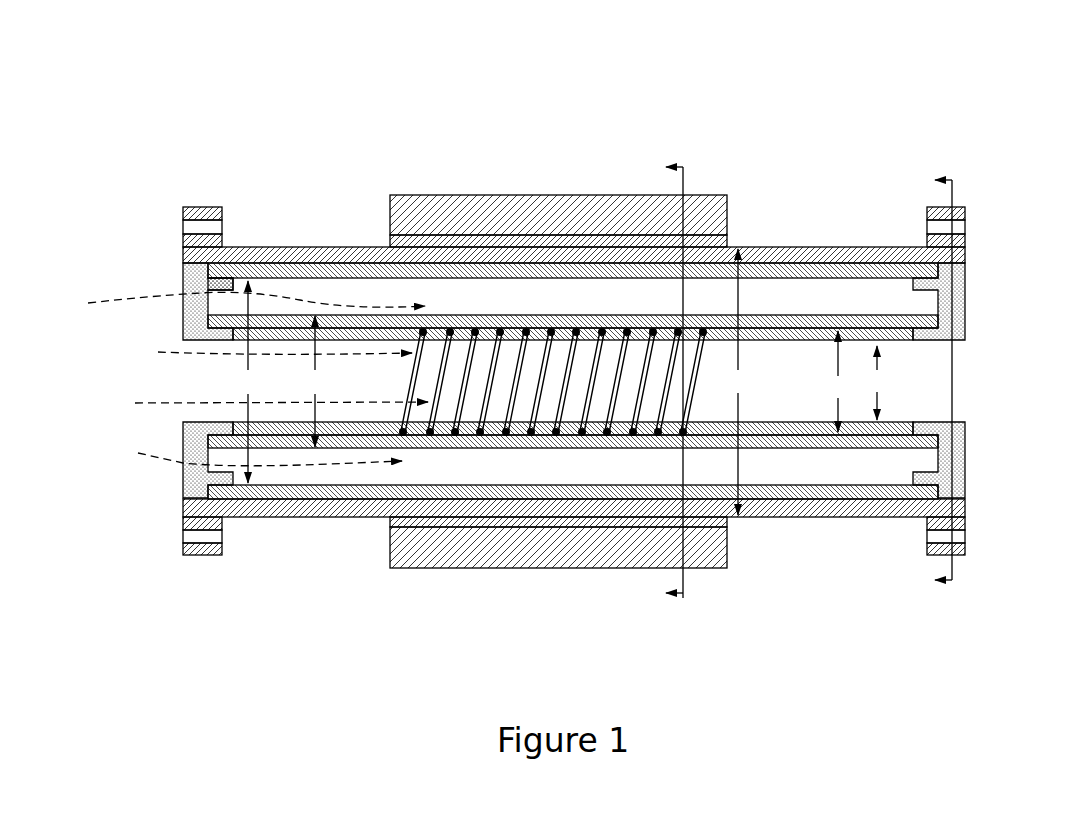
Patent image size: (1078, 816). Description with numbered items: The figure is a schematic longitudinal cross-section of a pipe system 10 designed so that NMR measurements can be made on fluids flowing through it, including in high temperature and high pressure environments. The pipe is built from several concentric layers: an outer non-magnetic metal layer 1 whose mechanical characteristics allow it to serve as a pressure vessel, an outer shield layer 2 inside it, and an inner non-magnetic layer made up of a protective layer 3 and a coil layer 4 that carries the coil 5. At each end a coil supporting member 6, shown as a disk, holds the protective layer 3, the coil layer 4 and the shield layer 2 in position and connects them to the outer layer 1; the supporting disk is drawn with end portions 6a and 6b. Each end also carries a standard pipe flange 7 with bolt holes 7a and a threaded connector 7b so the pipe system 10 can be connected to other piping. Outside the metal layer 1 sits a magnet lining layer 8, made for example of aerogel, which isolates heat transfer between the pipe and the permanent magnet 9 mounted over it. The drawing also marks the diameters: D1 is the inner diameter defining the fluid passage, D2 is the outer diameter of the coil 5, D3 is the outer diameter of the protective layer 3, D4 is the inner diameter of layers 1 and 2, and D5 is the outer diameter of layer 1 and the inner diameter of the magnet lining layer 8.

The outer non-magnetic metal layer 1 is at (823, 250).
The outer shield layer 2 is at (938, 270).
The protective layer 3 is at (940, 324).
The coil layer 4 is at (903, 341).
The coil 5 is at (613, 383).
The coil supporting member 6 is at (967, 272).
The end block notch 6a is at (228, 290).
The end block 6b is at (220, 337).
The pipe flange 7 is at (521, 351).
The bolt holes 7a is at (185, 227).
The threaded connector 7b is at (183, 247).
The magnet lining layer 8 is at (388, 242).
The permanent magnet 9 is at (463, 218).
The pipe system 10 is at (210, 633).
The inner diameter D1 is at (878, 383).
The outer diameter of the coil D2 is at (839, 381).
The outer diameter of the protective layer D3 is at (316, 381).
The inner diameter of layers 1 and 2 D4 is at (254, 382).
The outer diameter of layer 1 D5 is at (739, 382).